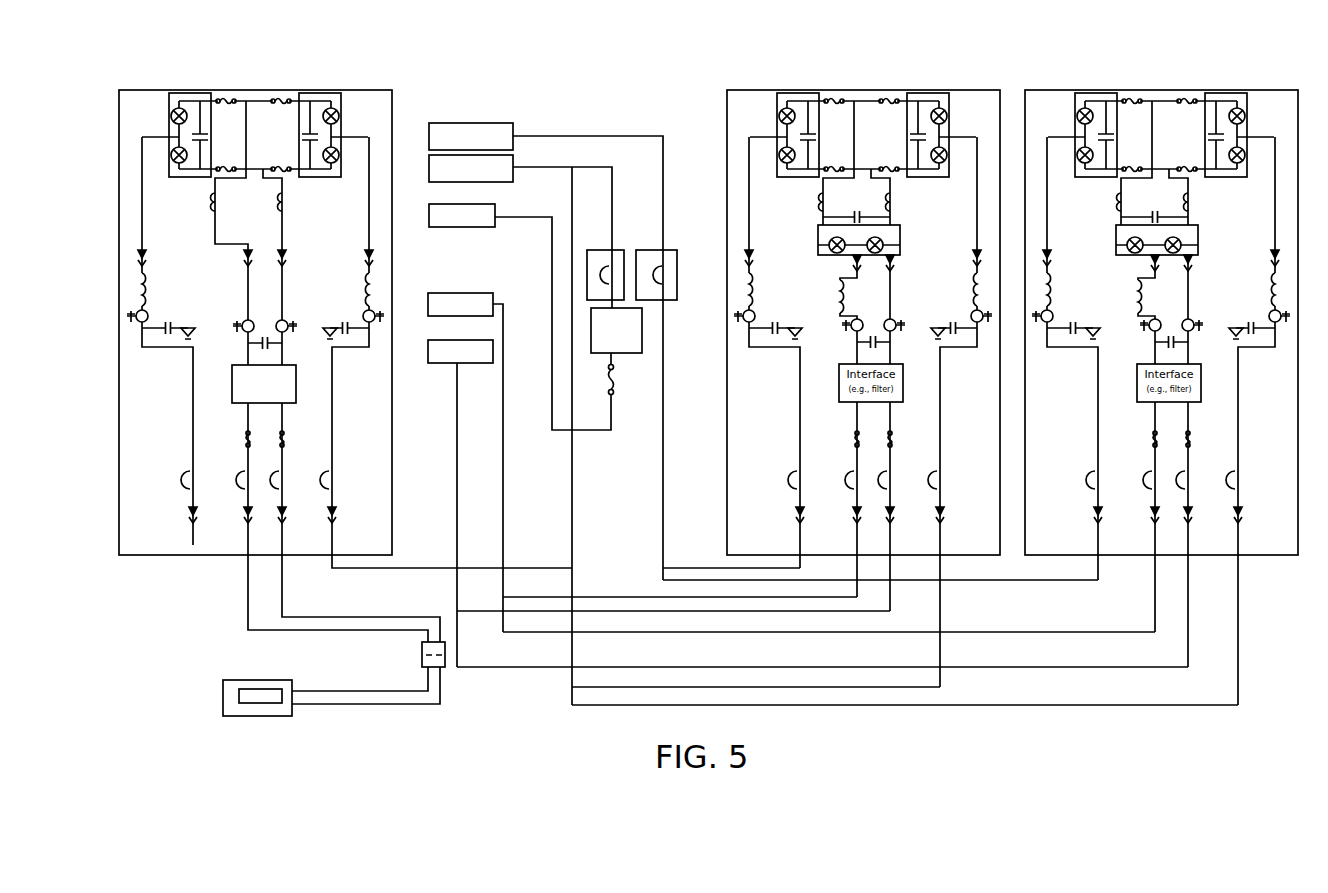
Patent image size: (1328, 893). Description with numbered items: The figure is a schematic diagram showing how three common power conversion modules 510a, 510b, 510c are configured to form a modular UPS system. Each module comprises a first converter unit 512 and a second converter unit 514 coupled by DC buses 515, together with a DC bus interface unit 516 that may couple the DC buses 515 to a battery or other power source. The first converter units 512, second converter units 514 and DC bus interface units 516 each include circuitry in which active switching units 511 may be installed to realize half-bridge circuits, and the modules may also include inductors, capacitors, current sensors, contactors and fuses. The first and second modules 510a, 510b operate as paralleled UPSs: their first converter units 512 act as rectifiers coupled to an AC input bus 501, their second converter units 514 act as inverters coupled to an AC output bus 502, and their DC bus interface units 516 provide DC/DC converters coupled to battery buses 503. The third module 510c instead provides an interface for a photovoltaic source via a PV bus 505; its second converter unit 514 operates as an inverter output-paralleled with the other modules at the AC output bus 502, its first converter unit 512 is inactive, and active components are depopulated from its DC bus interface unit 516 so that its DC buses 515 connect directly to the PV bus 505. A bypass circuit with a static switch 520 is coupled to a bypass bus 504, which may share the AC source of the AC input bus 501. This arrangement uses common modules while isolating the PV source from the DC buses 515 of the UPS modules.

The AC input bus 501 is at (468, 123).
The AC output bus 502 is at (468, 182).
The battery buses 503 is at (453, 279).
The bypass bus 504 is at (468, 227).
The PV bus 505 is at (364, 714).
The first module 510a is at (820, 90).
The second module 510b is at (1116, 90).
The third module 510c is at (226, 90).
The active switching unit 511 is at (198, 178).
The first converter unit 512 is at (152, 104).
The second converter unit 514 is at (350, 102).
The DC buses 515 is at (255, 95).
The DC bus interface unit 516 is at (294, 308).
The static switch 520 is at (616, 354).